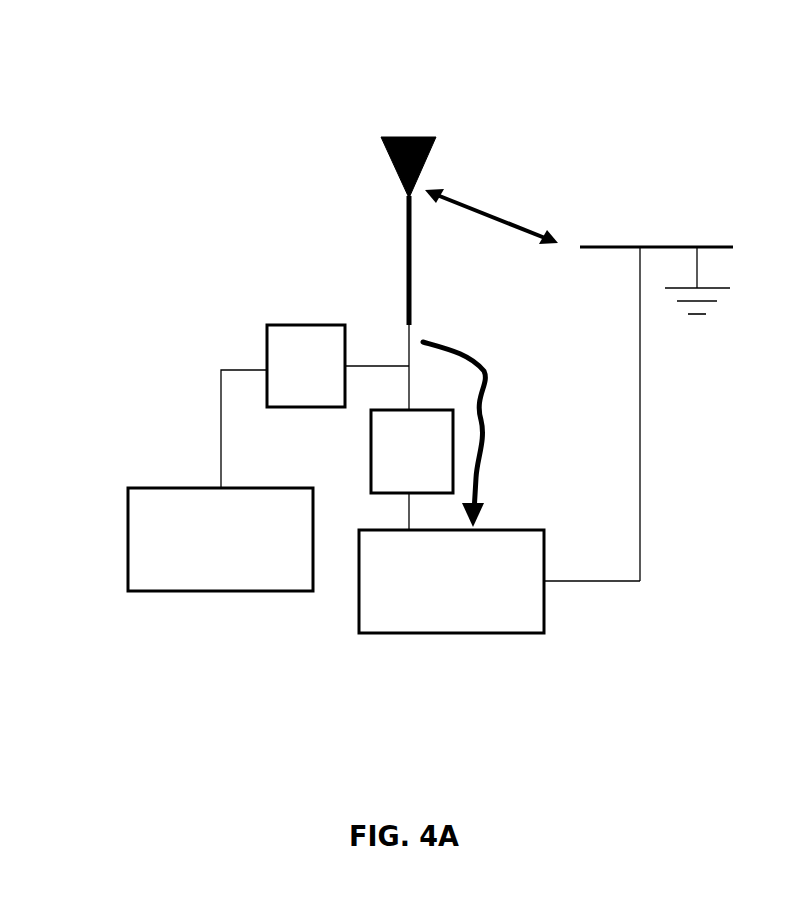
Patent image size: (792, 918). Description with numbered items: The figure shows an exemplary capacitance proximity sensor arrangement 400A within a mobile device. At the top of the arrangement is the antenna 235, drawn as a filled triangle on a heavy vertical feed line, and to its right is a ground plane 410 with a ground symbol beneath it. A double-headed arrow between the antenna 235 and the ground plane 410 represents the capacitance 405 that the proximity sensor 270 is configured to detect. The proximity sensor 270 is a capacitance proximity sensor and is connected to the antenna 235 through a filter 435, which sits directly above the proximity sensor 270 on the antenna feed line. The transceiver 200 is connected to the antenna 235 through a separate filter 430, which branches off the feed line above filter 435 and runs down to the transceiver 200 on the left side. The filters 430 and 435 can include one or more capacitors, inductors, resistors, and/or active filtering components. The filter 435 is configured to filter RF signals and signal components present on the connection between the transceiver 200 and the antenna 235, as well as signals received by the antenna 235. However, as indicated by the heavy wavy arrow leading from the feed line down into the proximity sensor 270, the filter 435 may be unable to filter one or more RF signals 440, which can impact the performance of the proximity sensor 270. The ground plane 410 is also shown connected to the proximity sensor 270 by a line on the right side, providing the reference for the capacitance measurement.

The antenna system 400A is at (224, 109).
The antenna 235 is at (396, 172).
The capacitance 405 is at (510, 228).
The ground plane 410 is at (722, 247).
The filter 430 is at (267, 346).
The filter 435 is at (371, 454).
The RF signals 440 is at (466, 348).
The transceiver 200 is at (250, 592).
The proximity sensor 270 is at (440, 634).